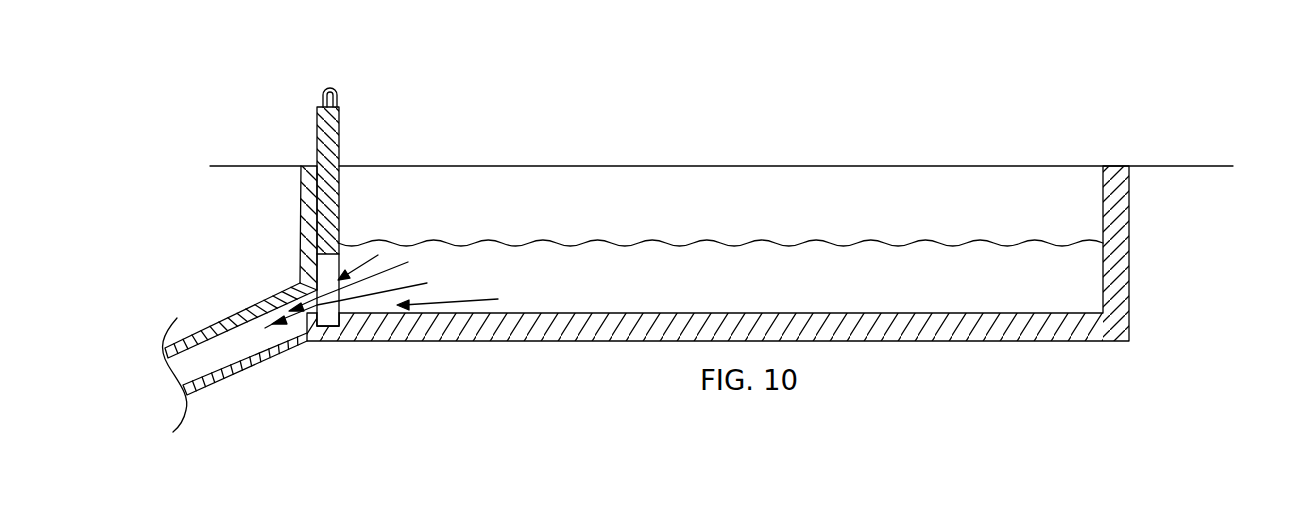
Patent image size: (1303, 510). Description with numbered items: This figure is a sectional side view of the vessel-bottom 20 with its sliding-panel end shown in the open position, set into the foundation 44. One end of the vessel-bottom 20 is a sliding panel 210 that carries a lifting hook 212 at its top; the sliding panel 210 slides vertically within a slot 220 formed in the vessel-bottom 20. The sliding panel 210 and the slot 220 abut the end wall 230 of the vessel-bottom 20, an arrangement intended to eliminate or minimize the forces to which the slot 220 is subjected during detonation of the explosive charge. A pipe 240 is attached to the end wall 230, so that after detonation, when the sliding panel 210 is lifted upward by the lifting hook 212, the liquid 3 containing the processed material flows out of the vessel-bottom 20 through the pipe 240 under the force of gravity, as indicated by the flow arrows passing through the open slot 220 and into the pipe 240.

The liquid 3 is at (840, 285).
The vessel-bottom 20 is at (1130, 258).
The foundation 44 is at (1192, 166).
The sliding panel 210 is at (339, 196).
The lifting hook 212 is at (331, 87).
The slot 220 is at (328, 270).
The end wall 230 is at (301, 216).
The pipe 240 is at (245, 310).